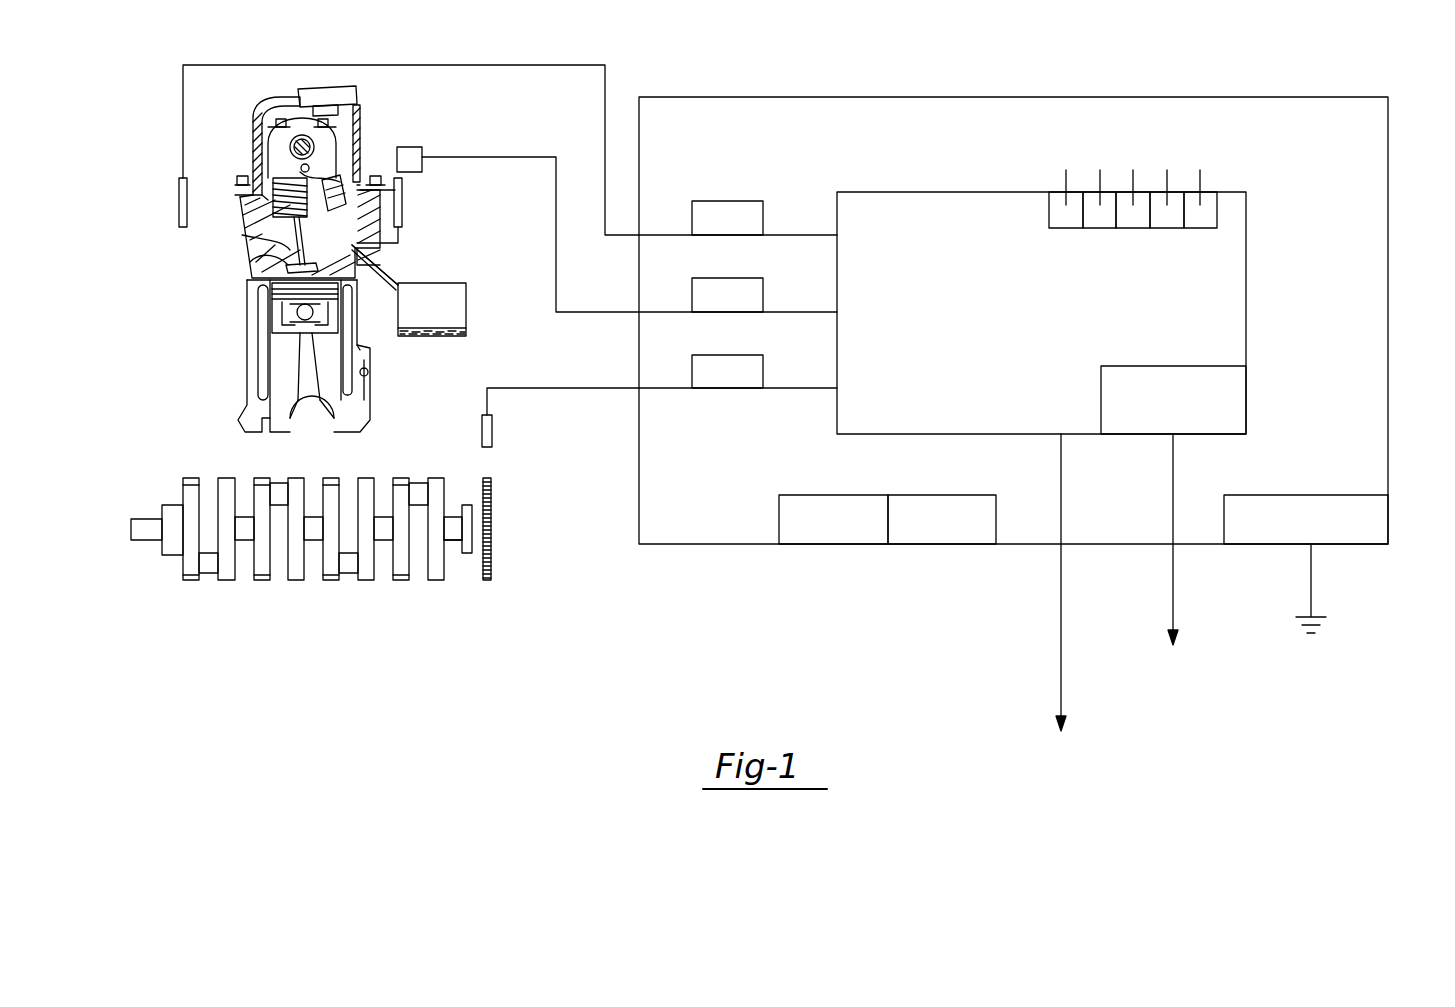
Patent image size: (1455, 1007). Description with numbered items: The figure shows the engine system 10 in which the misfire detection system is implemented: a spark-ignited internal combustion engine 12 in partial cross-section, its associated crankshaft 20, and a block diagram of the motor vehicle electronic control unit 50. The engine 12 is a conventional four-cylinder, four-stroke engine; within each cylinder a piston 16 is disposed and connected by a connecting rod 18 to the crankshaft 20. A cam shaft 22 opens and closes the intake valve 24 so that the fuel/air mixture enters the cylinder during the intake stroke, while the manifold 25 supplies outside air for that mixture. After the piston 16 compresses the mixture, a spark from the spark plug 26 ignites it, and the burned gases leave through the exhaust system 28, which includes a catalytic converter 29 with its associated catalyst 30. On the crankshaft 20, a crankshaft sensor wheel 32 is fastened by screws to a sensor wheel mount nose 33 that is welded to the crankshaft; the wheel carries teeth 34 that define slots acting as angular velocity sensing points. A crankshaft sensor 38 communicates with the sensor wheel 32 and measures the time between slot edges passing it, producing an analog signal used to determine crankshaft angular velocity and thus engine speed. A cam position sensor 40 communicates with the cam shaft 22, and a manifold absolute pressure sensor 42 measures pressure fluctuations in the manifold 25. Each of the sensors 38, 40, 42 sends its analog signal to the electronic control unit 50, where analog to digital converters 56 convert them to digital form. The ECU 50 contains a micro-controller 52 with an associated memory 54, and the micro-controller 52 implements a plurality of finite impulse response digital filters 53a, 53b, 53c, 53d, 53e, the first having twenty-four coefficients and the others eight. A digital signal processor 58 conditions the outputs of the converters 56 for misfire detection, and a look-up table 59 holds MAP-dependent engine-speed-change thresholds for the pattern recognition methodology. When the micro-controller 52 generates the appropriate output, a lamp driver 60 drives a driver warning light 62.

The engine system 10 is at (1206, 53).
The internal combustion spark ignited engine 12 is at (198, 320).
The piston 16 is at (305, 383).
The connecting rod 18 is at (316, 430).
The crankshaft 20 is at (172, 548).
The cam shaft 22 is at (291, 147).
The intake valve 24 is at (257, 193).
The manifold 25 is at (257, 245).
The spark plug 26 is at (398, 237).
The exhaust system 28 is at (382, 280).
The catalytic converter 29 is at (466, 290).
The catalyst 30 is at (430, 336).
The crankshaft sensor wheel 32 is at (491, 567).
The sensor wheel mount nose 33 is at (452, 543).
The teeth 34 is at (491, 489).
The crankshaft sensor 38 is at (492, 424).
The cam position sensor 40 is at (405, 148).
The manifold absolute pressure (MAP) sensor 42 is at (178, 212).
The electronic control unit 50 is at (1388, 318).
The micro-controller 52 is at (1246, 338).
The FIR digital filter 53a is at (1066, 176).
The FIR digital filter 53b is at (1100, 172).
The FIR digital filter 53c is at (1133, 172).
The FIR digital filter 53d is at (1167, 172).
The FIR digital filter 53e is at (1200, 176).
The memory 54 is at (1183, 366).
The analog to digital converters 56 is at (718, 201).
The digital signal processor 58 is at (800, 495).
The look-up table 59 is at (968, 495).
The lamp driver 60 is at (1330, 495).
The driver warning light 62 is at (1318, 616).